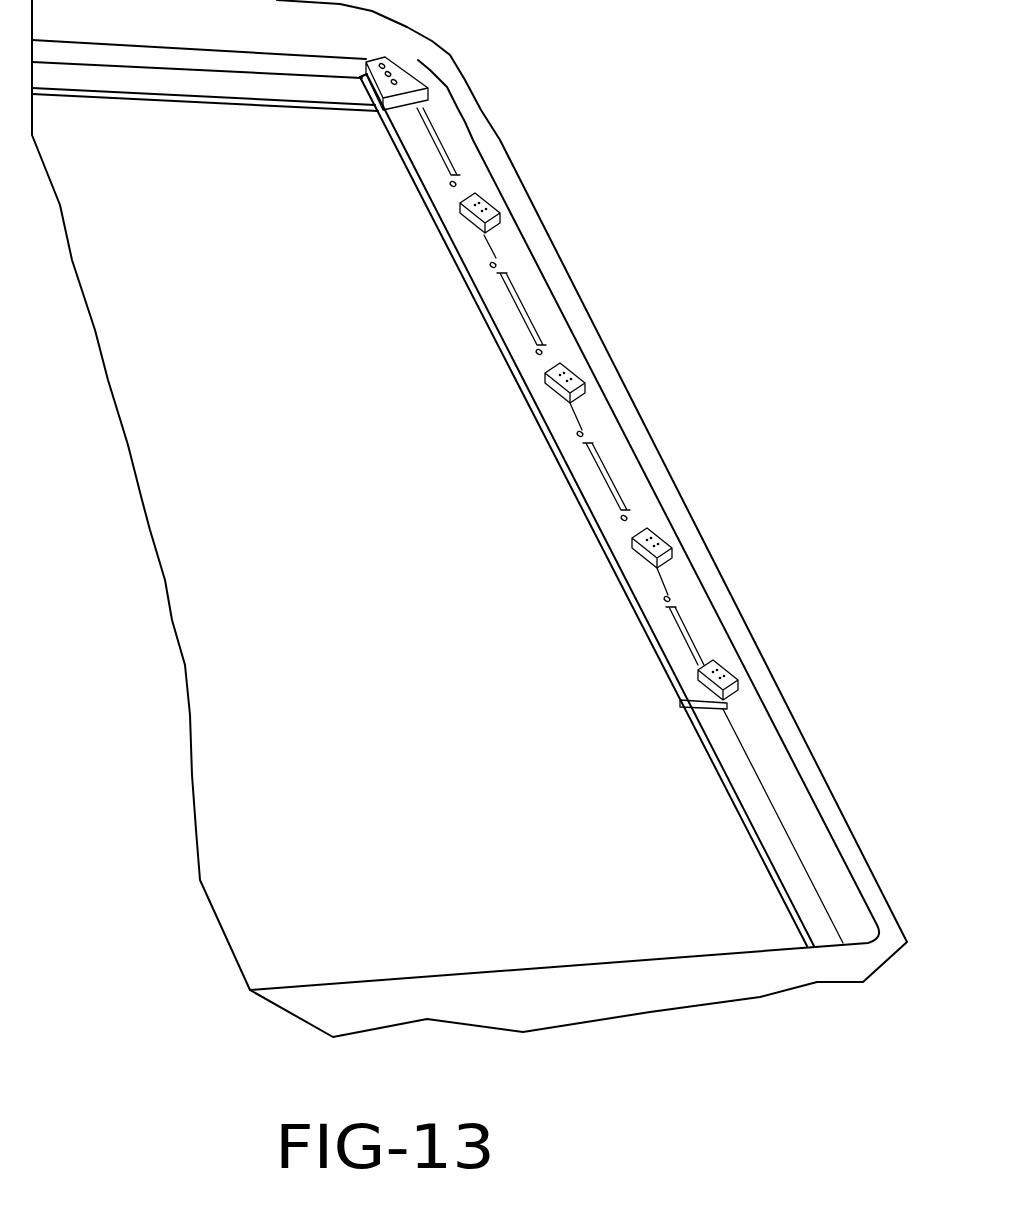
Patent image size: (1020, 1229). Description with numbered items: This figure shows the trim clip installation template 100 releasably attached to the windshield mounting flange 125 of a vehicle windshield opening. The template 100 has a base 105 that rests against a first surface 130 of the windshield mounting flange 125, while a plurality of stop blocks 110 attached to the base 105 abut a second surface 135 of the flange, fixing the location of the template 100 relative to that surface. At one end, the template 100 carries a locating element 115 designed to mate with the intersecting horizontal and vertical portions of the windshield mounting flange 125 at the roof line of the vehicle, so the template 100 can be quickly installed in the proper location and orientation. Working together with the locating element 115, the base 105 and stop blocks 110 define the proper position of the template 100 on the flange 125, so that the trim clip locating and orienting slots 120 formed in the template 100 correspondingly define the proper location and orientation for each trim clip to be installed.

The template 100 is at (536, 410).
The base 105 is at (619, 404).
The stop blocks 110 is at (665, 540).
The locating element 115 is at (408, 62).
The trim clip locating and orienting slots 120 is at (517, 307).
The windshield mounting flange 125 is at (738, 854).
The first surface 130 is at (747, 788).
The second surface 135 is at (758, 728).